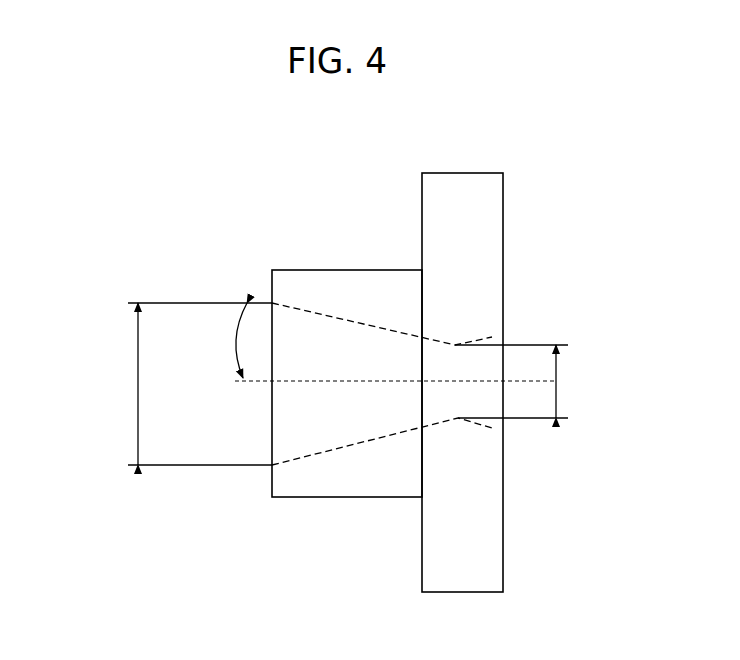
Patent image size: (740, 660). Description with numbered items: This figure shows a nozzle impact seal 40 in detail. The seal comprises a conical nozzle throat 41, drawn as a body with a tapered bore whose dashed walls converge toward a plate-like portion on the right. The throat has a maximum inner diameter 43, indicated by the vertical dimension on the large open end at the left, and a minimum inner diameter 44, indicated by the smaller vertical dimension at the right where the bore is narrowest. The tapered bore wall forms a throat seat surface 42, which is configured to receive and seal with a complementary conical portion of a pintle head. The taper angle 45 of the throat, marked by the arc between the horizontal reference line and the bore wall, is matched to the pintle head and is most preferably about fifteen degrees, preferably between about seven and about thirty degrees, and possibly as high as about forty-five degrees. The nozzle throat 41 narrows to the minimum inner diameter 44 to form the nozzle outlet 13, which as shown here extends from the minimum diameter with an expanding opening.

The nozzle impact seal 40 is at (354, 380).
The conical nozzle throat 41 is at (330, 430).
The nozzle outlet 13 is at (462, 398).
The throat seat surface 42 is at (340, 318).
The maximum inner diameter 43 is at (138, 392).
The minimum inner diameter 44 is at (556, 381).
The taper angle 45 is at (235, 333).